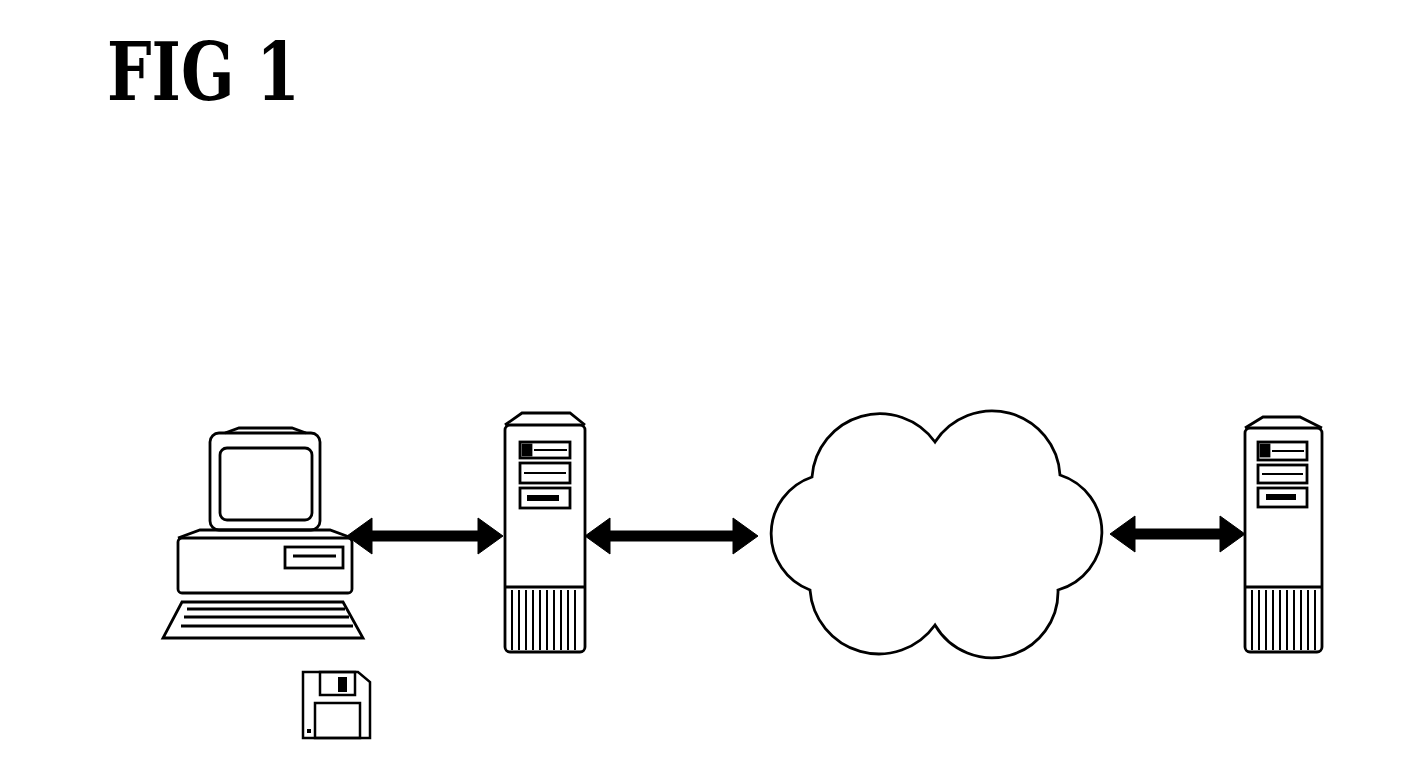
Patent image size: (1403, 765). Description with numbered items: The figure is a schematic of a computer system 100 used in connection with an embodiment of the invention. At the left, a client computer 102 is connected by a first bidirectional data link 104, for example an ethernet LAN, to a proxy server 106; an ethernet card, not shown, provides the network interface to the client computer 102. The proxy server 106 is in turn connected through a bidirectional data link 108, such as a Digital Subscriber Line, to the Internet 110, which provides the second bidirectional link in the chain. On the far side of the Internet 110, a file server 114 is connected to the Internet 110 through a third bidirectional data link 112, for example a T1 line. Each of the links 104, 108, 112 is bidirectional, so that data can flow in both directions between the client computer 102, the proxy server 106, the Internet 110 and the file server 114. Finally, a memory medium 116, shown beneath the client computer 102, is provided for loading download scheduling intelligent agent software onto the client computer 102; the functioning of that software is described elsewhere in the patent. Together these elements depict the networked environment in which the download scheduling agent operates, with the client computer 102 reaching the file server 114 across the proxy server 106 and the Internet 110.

The computer system 100 is at (767, 307).
The client computer 102 is at (273, 430).
The first bidirectional data link 104 is at (408, 528).
The proxy server 106 is at (585, 465).
The bidirectional data link 108 is at (670, 528).
The Internet 110 is at (810, 477).
The third bidirectional data link 112 is at (1180, 527).
The file server 114 is at (1322, 430).
The memory medium 116 is at (370, 717).